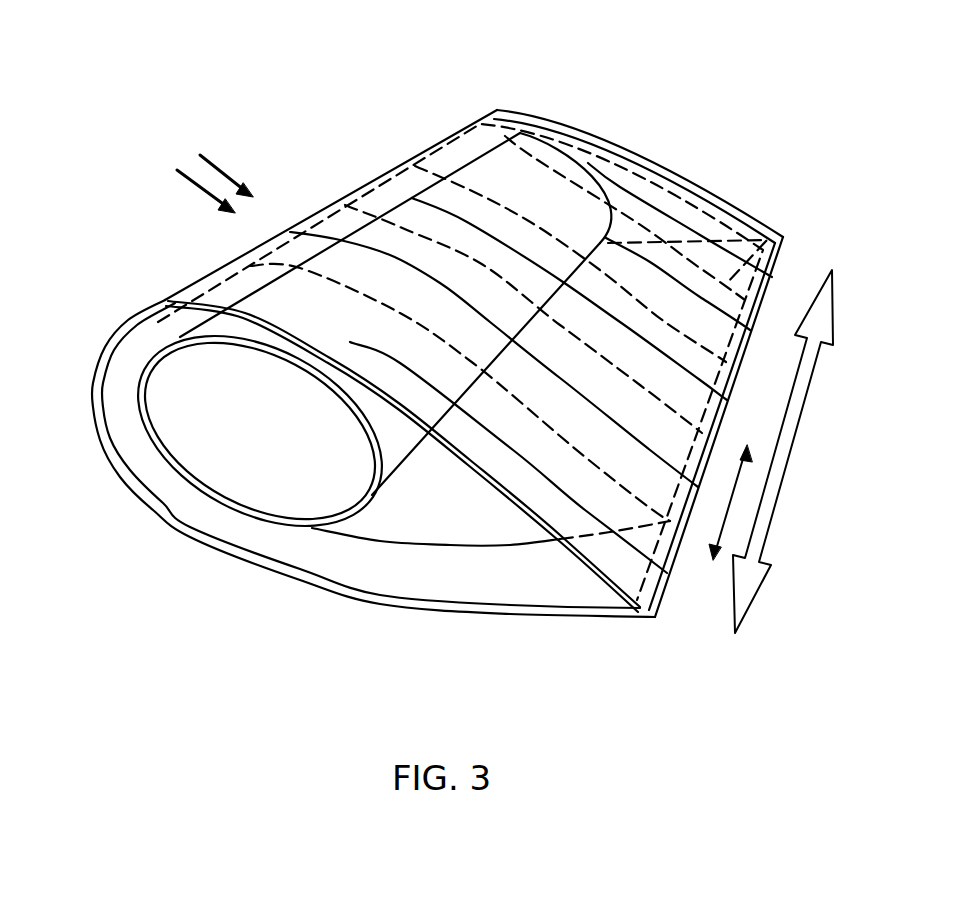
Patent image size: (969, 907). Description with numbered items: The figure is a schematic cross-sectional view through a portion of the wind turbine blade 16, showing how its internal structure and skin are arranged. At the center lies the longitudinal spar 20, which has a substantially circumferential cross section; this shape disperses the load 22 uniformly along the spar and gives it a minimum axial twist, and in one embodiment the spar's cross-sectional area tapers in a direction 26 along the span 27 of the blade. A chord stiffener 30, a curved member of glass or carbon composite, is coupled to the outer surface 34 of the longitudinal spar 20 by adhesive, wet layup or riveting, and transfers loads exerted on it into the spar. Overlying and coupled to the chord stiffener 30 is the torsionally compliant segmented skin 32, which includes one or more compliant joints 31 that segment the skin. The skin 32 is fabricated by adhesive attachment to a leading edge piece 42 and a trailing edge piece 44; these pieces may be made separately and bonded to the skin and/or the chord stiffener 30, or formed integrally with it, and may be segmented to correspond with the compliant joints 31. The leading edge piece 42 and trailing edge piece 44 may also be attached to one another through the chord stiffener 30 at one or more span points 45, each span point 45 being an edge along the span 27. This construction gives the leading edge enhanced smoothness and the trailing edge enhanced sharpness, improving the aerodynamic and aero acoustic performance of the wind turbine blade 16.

The wind turbine blade 16 is at (152, 56).
The longitudinal spar 20 is at (382, 463).
The load 22 is at (217, 163).
The direction 26 is at (735, 490).
The span 27 is at (770, 537).
The chord stiffener 30 is at (423, 172).
The compliant joint 31 is at (340, 240).
The torsionally compliant segmented skin 32 is at (717, 270).
The outer surface 34 is at (388, 447).
The leading edge piece 42 is at (185, 303).
The trailing edge piece 44 is at (738, 383).
The span point 45 is at (783, 237).